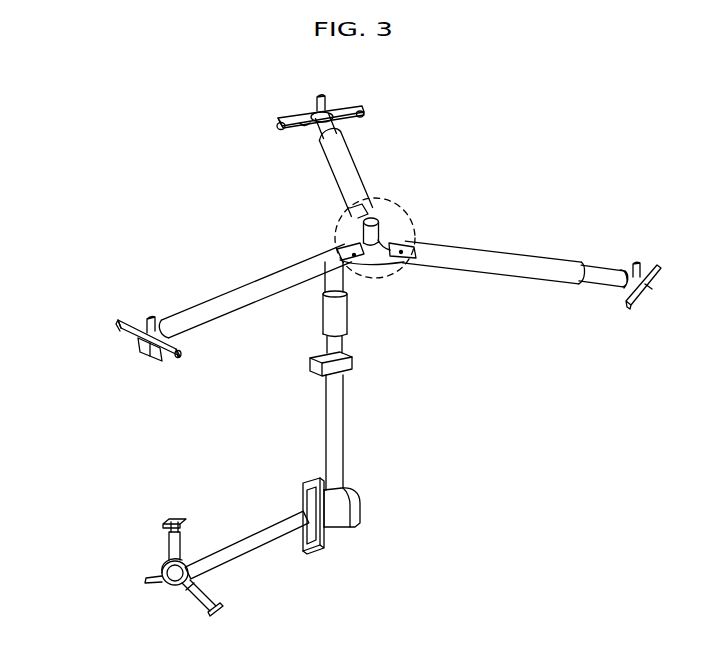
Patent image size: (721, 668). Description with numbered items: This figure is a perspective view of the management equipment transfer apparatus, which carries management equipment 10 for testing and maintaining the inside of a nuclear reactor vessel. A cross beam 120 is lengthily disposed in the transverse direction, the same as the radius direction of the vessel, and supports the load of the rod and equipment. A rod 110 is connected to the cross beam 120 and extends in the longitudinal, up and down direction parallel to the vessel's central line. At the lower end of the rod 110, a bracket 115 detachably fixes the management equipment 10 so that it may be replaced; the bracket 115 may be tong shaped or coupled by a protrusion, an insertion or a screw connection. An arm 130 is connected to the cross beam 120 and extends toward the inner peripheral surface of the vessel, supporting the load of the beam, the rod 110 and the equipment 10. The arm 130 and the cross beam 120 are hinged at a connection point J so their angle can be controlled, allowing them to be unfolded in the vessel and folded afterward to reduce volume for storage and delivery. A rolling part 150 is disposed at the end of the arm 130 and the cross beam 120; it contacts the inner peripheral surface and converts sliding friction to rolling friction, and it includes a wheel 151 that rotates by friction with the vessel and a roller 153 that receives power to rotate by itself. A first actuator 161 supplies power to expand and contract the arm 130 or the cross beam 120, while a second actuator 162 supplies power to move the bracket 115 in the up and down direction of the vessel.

The management equipment 10 is at (252, 544).
The rod 110 is at (340, 416).
The bracket 115 is at (362, 498).
The cross beam 120 is at (262, 290).
The arm 130 is at (350, 176).
The rolling part 150 is at (105, 322).
The wheel 151 is at (118, 334).
The roller 153 is at (145, 313).
The first actuator 161 is at (390, 266).
The second actuator 162 is at (310, 360).
The connection point J is at (410, 222).